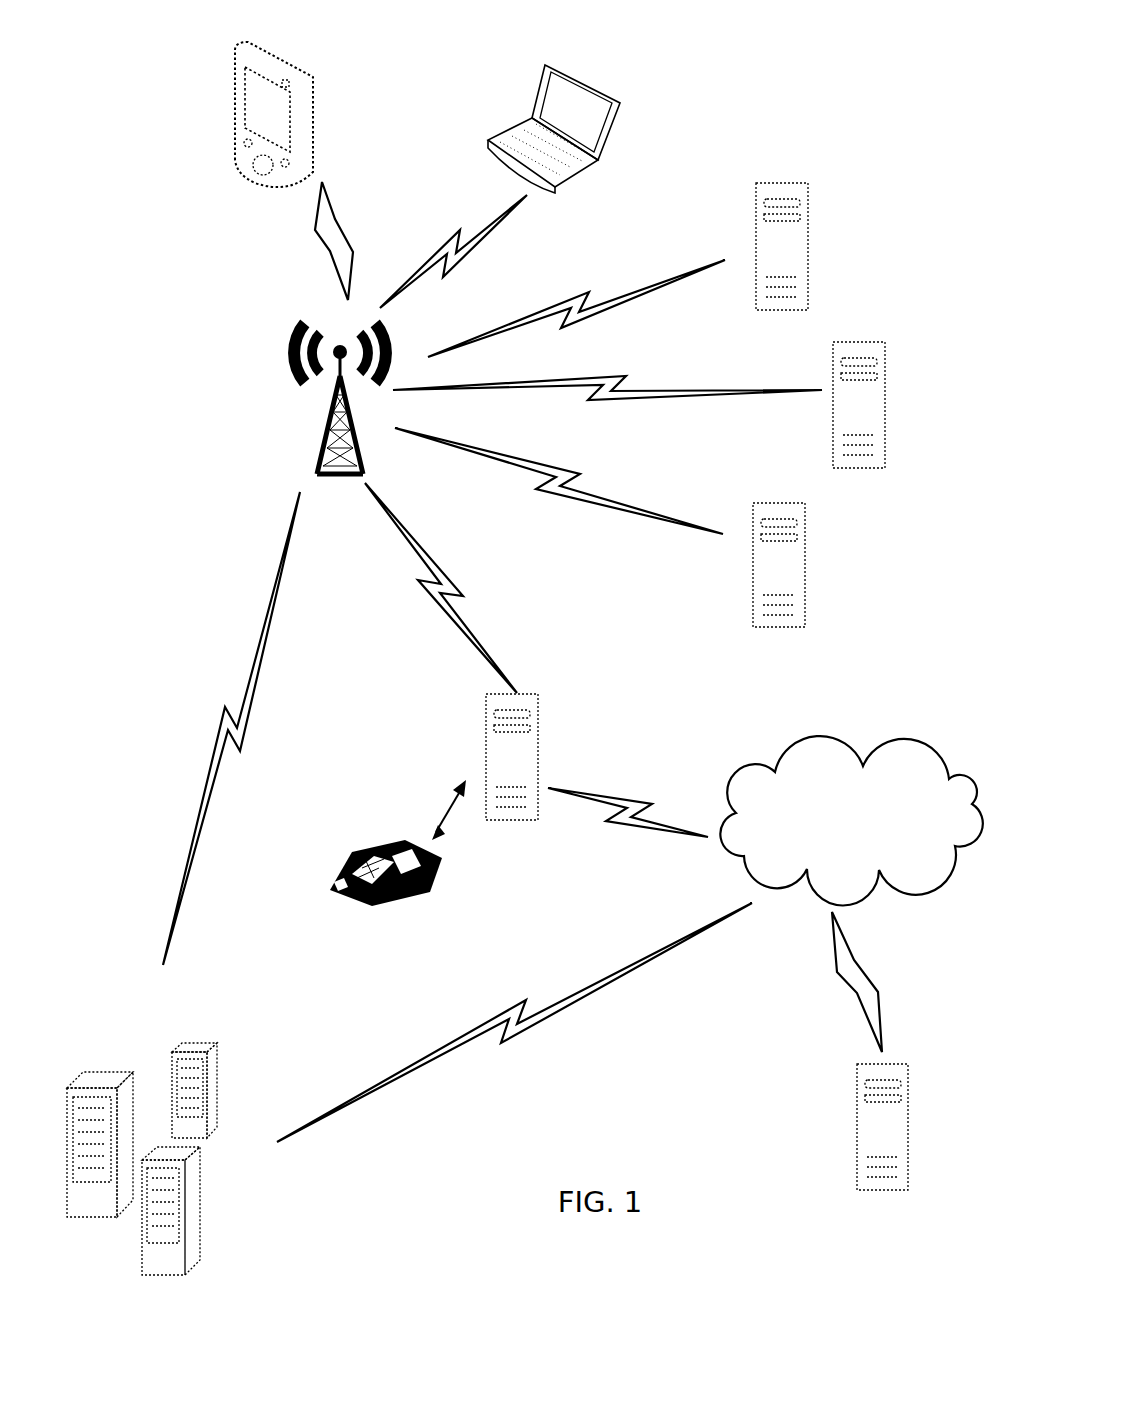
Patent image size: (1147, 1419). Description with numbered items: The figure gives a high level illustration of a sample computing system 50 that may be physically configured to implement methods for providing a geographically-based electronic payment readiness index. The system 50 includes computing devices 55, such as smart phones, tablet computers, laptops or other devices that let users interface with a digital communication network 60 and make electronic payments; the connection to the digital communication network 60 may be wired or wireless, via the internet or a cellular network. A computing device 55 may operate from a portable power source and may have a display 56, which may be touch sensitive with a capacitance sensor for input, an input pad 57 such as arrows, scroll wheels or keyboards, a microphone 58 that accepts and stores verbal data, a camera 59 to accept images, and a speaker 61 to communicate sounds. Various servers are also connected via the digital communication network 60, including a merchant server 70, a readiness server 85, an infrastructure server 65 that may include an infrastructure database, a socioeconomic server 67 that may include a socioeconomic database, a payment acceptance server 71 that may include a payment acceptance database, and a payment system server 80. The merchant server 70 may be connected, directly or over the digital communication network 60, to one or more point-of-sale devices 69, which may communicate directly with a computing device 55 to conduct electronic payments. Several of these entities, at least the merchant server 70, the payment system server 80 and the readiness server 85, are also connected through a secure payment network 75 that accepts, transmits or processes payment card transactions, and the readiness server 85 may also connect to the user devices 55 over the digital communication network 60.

The computing system 50 is at (172, 336).
The computing device 55 is at (235, 75).
The display 56 is at (257, 107).
The input pad 57 is at (248, 178).
The microphone 58 is at (243, 143).
The camera 59 is at (287, 80).
The digital communication network 60 is at (300, 424).
The speaker 61 is at (285, 170).
The infrastructure server 65 is at (796, 246).
The socioeconomic server 67 is at (850, 408).
The point-of-sale device 69 is at (386, 830).
The merchant server 70 is at (522, 760).
The payment acceptance server 71 is at (773, 575).
The payment network 75 is at (851, 820).
The payment system server 80 is at (897, 1128).
The readiness server 85 is at (212, 1203).